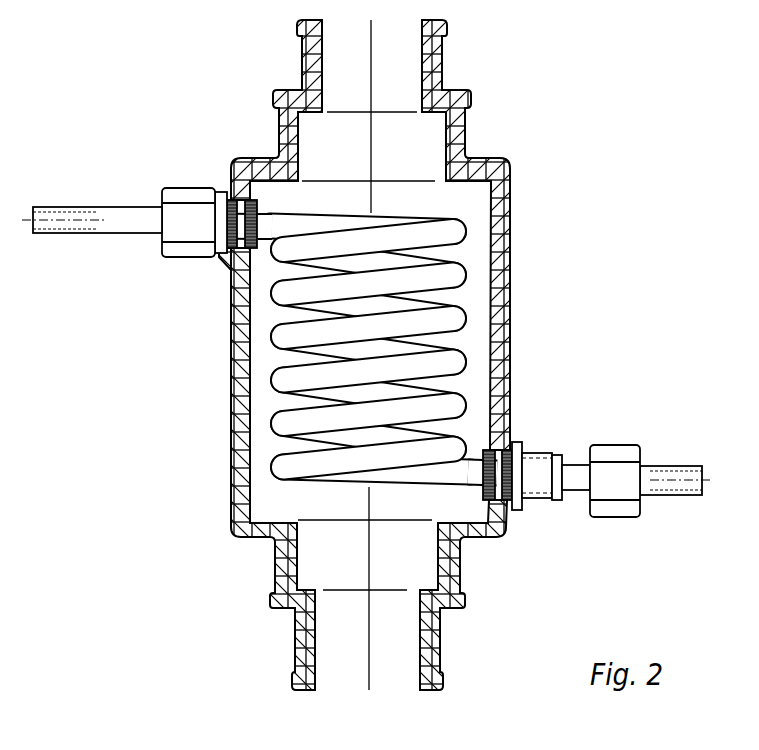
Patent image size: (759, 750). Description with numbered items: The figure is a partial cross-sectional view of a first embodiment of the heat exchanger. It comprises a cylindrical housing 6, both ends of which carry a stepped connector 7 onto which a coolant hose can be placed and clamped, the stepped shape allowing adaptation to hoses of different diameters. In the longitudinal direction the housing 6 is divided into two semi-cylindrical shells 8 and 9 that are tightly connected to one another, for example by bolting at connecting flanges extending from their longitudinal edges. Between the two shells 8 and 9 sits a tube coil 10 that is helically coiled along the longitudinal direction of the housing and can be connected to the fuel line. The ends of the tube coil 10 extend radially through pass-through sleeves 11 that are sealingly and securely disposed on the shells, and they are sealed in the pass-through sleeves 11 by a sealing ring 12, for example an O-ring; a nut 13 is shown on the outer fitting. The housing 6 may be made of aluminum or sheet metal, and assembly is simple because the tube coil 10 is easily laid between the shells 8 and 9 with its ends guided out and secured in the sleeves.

The cylindrical housing 6 is at (516, 205).
The stepped connector 7 is at (471, 118).
The semi-cylindrical shell 8 is at (503, 279).
The semi-cylindrical shell 9 is at (238, 342).
The tube coil 10 is at (270, 424).
The pass-through sleeve 11 is at (540, 452).
The sealing ring 12 is at (557, 501).
The nut 13 is at (617, 446).